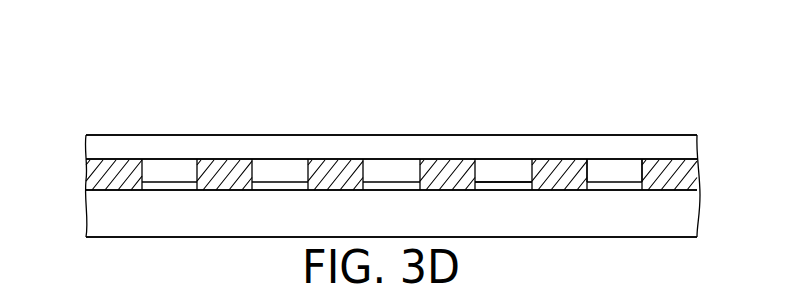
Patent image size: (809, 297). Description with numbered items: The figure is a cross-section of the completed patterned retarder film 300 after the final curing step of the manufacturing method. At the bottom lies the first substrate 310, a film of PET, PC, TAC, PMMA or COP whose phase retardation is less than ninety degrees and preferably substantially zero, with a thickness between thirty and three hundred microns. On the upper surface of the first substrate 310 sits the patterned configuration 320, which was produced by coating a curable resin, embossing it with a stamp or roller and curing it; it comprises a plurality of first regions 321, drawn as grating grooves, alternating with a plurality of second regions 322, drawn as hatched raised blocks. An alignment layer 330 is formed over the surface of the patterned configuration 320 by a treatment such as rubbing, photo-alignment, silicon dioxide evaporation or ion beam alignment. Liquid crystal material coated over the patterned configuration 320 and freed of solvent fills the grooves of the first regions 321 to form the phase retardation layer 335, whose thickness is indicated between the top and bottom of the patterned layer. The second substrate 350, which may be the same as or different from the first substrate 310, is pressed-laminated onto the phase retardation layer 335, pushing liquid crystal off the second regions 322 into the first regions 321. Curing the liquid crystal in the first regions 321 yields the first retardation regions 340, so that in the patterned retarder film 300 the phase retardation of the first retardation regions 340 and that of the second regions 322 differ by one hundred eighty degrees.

The patterned retarder film 300 is at (753, 43).
The first substrate 310 is at (693, 222).
The patterned configuration 320 is at (105, 92).
The first regions 321 is at (167, 183).
The second regions 322 is at (227, 168).
The alignment layer 330 is at (500, 180).
The phase retardation layer 335 is at (62, 138).
The first retardation regions 340 is at (605, 172).
The second substrate 350 is at (685, 150).